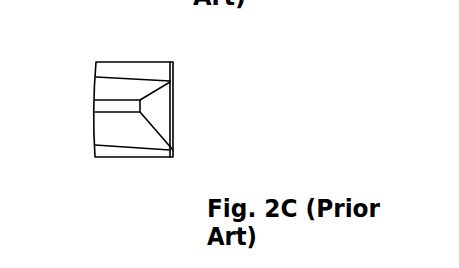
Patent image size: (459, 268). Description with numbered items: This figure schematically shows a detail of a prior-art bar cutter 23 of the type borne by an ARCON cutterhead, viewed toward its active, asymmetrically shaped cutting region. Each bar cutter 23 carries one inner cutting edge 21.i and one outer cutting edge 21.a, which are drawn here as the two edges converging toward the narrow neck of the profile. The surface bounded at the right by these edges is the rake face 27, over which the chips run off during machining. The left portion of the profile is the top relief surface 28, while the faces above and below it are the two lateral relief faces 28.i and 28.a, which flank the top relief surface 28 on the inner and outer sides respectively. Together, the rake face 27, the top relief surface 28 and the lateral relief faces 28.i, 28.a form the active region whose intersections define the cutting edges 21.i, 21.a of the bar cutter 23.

The bar cutter 23 is at (73, 61).
The rake face 27 is at (158, 112).
The top relief surface 28 is at (100, 106).
The lateral relief face 28.i is at (125, 83).
The lateral relief face 28.a is at (123, 128).
The inner cutting edge 21.i is at (158, 91).
The outer cutting edge 21.a is at (158, 130).